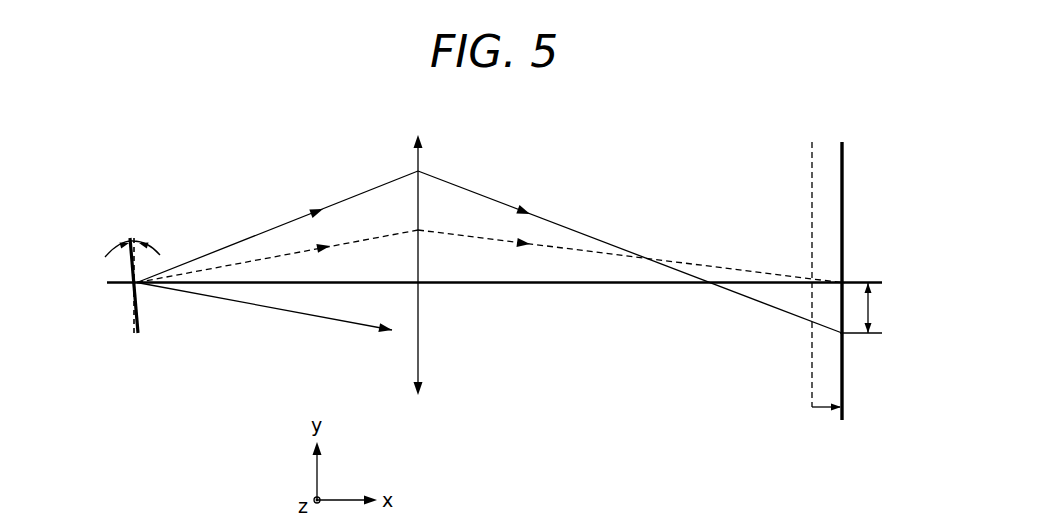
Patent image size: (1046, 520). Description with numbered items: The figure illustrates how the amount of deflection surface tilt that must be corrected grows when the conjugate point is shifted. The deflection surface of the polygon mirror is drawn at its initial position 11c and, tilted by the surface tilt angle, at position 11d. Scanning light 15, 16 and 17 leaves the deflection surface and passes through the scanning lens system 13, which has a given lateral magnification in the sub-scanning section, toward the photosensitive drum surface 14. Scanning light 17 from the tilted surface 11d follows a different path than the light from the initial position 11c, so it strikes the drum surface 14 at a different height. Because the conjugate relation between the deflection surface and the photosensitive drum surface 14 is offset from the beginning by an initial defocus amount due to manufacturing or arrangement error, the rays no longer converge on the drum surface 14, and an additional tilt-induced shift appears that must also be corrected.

The initial position of the deflection surface 11c is at (132, 324).
The position of the deflection surface when tilted 11d is at (140, 315).
The scanning lens system 13 is at (418, 362).
The photosensitive drum surface 14 is at (842, 150).
The scanning light 15 is at (282, 312).
The scanning light 16 is at (287, 222).
The scanning light 17 is at (390, 235).